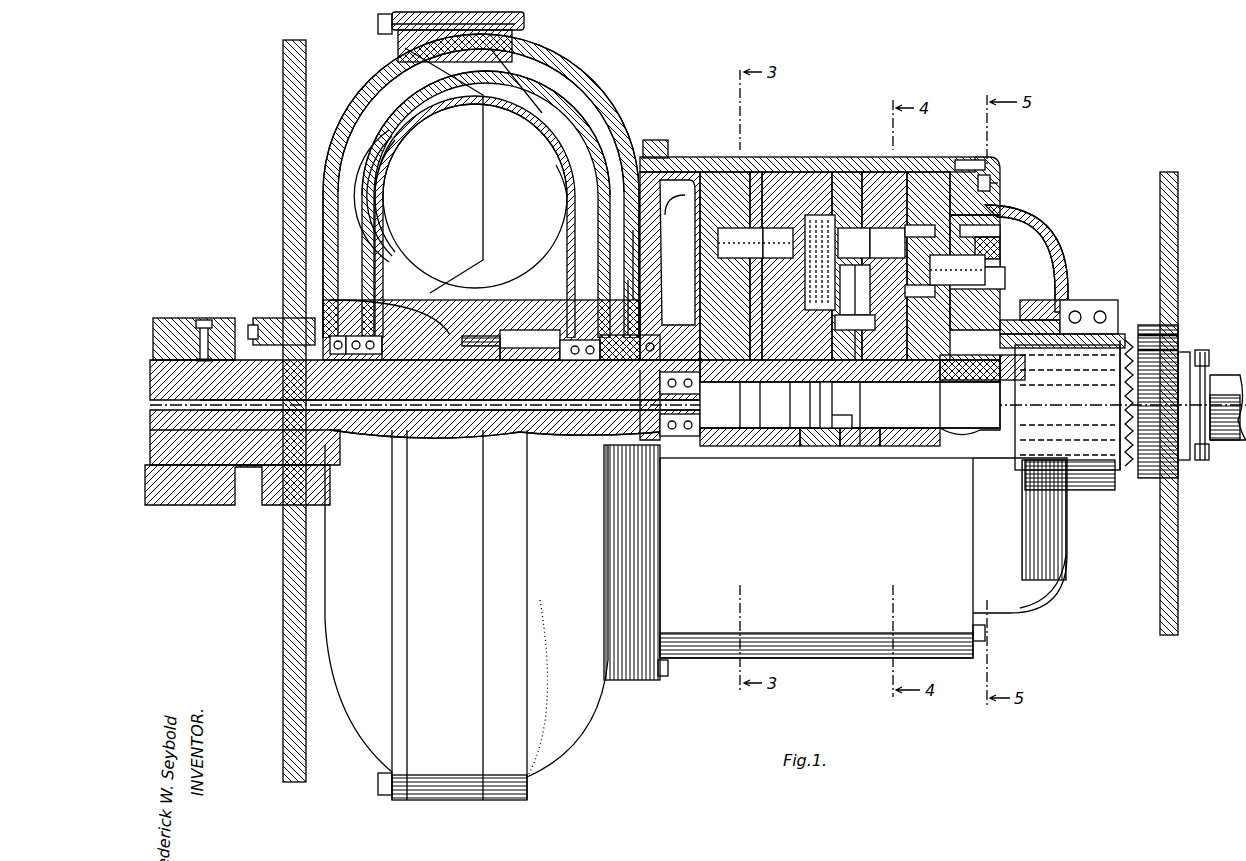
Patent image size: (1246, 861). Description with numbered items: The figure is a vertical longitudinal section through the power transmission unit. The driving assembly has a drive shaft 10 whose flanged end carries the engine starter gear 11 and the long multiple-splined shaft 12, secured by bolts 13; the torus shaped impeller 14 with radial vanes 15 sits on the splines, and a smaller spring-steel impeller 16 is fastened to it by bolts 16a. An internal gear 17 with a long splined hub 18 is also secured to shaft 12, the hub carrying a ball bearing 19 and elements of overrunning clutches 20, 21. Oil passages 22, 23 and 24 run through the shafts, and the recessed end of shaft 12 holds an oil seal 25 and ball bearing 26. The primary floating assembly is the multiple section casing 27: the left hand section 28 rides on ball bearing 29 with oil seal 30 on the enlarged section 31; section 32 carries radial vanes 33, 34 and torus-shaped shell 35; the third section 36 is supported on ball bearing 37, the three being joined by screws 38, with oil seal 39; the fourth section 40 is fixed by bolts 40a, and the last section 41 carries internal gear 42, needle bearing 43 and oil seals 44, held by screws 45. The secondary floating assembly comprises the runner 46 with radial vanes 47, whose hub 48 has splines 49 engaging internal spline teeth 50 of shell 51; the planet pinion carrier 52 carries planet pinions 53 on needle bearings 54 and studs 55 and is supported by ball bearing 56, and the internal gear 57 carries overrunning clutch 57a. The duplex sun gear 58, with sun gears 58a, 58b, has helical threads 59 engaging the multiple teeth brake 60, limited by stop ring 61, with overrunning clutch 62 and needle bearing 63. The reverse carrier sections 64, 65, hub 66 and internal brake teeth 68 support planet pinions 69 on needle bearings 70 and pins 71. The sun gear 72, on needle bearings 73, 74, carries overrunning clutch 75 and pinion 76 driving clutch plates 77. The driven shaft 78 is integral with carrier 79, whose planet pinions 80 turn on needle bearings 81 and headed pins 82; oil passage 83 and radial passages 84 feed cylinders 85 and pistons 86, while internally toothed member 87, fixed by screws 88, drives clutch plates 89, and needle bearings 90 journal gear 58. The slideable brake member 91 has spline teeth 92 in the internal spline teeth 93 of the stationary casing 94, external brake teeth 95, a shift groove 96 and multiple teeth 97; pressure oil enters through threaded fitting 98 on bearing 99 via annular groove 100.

The drive shaft 10 is at (160, 400).
The engine starter gear 11 is at (283, 132).
The long multiple-splined shaft 12 is at (440, 425).
The bolts 13 is at (258, 320).
The torus shaped impeller 14 is at (380, 96).
The radial vanes 15 is at (486, 237).
The smaller impeller 16 is at (384, 197).
The bolts 16a is at (430, 284).
The internal gear 17 is at (706, 210).
The multiple splined hub 18 is at (566, 360).
The ball bearing 19 is at (548, 330).
The overrunning clutch 20 is at (520, 362).
The overrunning clutch 21 is at (710, 372).
The oil passage 22 is at (200, 437).
The oil passage 23 is at (250, 470).
The oil passage 24 is at (470, 448).
The oil seal 25 is at (642, 418).
The ball bearing 26 is at (690, 440).
The multiple section casing 27 is at (524, 20).
The left hand section 28 is at (392, 72).
The ball bearing 29 is at (358, 352).
The oil seal 30 is at (338, 350).
The enlarged section 31 is at (384, 356).
The casing section 32 is at (474, 62).
The radial vanes 33 is at (516, 93).
The radial vanes 34 is at (535, 140).
The torus-shaped shell 35 is at (562, 164).
The third section 36 is at (620, 100).
The ball bearing 37 is at (640, 322).
The screws 38 is at (378, 23).
The oil seal 39 is at (645, 350).
The fourth section 40 is at (782, 165).
The bolts 40a is at (668, 143).
The last section 41 is at (1040, 220).
The internal gear 42 is at (1030, 205).
The needle bearing 43 is at (1040, 300).
The oil seals 44 is at (1105, 312).
The screws 45 is at (992, 181).
The runner 46 is at (608, 118).
The radial vanes 47 is at (574, 94).
The hub 48 is at (620, 345).
The multiple splines 49 is at (628, 300).
The internal spline teeth 50 is at (633, 262).
The shell 51 is at (746, 213).
The planet pinion carrier 52 is at (765, 176).
The planet pinions 53 is at (757, 210).
The needle bearings 54 is at (740, 243).
The studs 55 is at (755, 243).
The ball bearing 56 is at (772, 446).
The internal gear 57 is at (889, 200).
The overrunning clutch 57a is at (957, 270).
The duplex sun gear 58 is at (952, 458).
The sun gear 58a is at (985, 380).
The sun gear 58b is at (962, 160).
The multiple helical threads 59 is at (1040, 412).
The multiple teeth brake 60 is at (1100, 470).
The stop ring 61 is at (1020, 382).
The overrunning clutch 62 is at (1050, 318).
The needle bearing 63 is at (945, 365).
The planetary pinion carrier section 64 is at (1000, 248).
The planetary pinion carrier section 65 is at (1002, 200).
The hub 66 is at (858, 318).
The internal brake teeth 68 is at (1080, 310).
The planet pinions 69 is at (1000, 235).
The needle bearings 70 is at (1000, 262).
The pins 71 is at (1005, 278).
The sun gear 72 is at (743, 404).
The needle bearing 73 is at (768, 404).
The needle bearing 74 is at (828, 446).
The overrunning clutch 75 is at (795, 446).
The externally toothed pinion 76 is at (816, 404).
The multiple clutch plates 77 is at (795, 404).
The driven shaft 78 is at (1222, 440).
The planet pinion carrier 79 is at (845, 440).
The planet pinions 80 is at (906, 215).
The needle bearings 81 is at (926, 215).
The headed pins 82 is at (887, 243).
The longitudinal oil passage 83 is at (722, 446).
The radial oil passages 84 is at (860, 448).
The small cylinders 85 is at (858, 300).
The small pistons 86 is at (854, 243).
The internally toothed member 87 is at (805, 205).
The screws 88 is at (856, 195).
The multiple clutch plates 89 is at (818, 213).
The needle bearings 90 is at (925, 446).
The slideable brake member 91 is at (1178, 348).
The external spline teeth 92 is at (1160, 322).
The internal spline teeth 93 is at (1178, 332).
The stationary transmission casing 94 is at (1178, 190).
The external brake teeth 95 is at (996, 370).
The groove 96 is at (1209, 360).
The multiple teeth 97 is at (1128, 470).
The threaded fitting 98 is at (205, 320).
The bearing 99 is at (176, 318).
The annular groove 100 is at (178, 358).